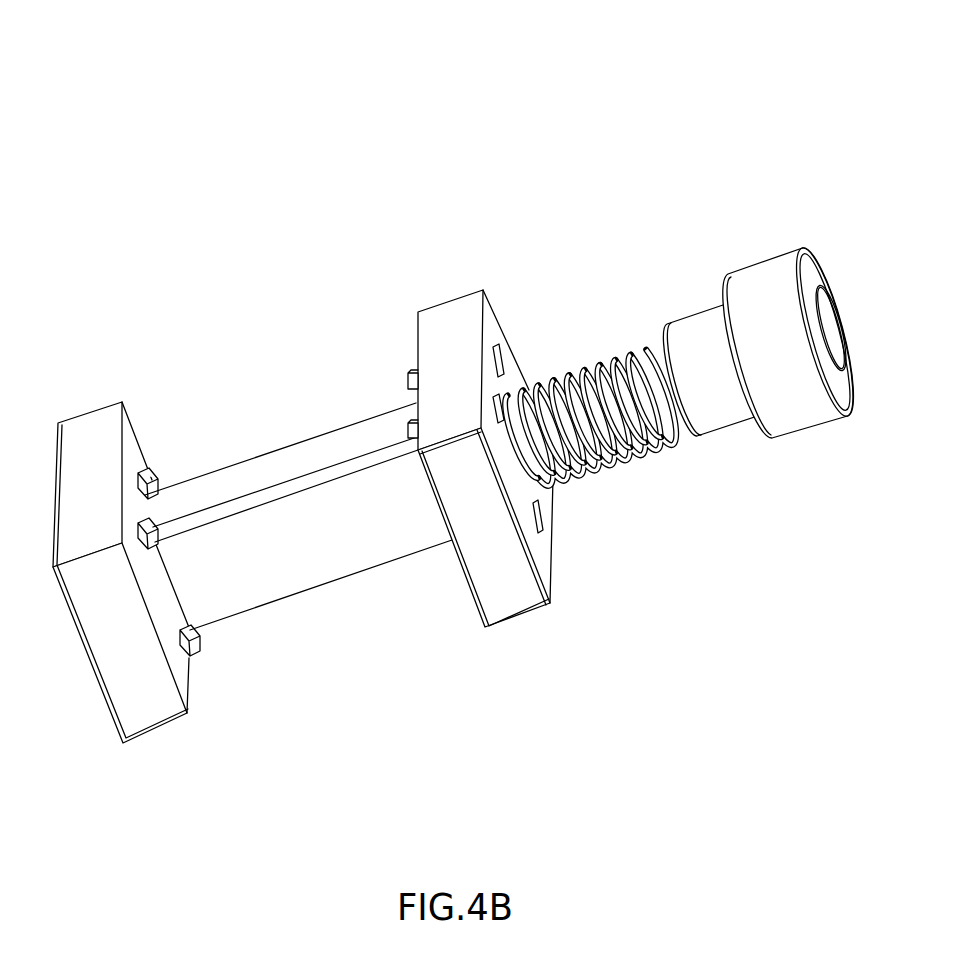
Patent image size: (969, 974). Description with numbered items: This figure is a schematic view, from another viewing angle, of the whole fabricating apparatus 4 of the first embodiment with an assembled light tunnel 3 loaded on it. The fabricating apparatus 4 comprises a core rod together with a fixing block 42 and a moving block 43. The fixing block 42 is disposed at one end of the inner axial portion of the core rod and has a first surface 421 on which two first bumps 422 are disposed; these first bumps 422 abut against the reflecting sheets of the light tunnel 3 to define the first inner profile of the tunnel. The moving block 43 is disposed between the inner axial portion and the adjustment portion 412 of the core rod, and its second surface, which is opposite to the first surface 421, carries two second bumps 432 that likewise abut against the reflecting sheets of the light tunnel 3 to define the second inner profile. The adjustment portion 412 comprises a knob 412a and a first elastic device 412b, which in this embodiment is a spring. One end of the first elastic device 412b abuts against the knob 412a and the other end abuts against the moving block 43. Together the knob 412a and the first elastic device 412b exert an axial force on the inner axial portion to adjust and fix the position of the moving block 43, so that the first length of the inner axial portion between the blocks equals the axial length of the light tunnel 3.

The fabricating apparatus 4 is at (355, 147).
The fixing block 42 is at (88, 383).
The first surface 421 is at (143, 466).
The first bumps 422 is at (137, 502).
The moving block 43 is at (447, 294).
The second bumps 432 is at (410, 378).
The light tunnel 3 is at (238, 560).
The adjustment portion 412 is at (628, 482).
The knob 412a is at (780, 278).
The first elastic device 412b is at (573, 375).